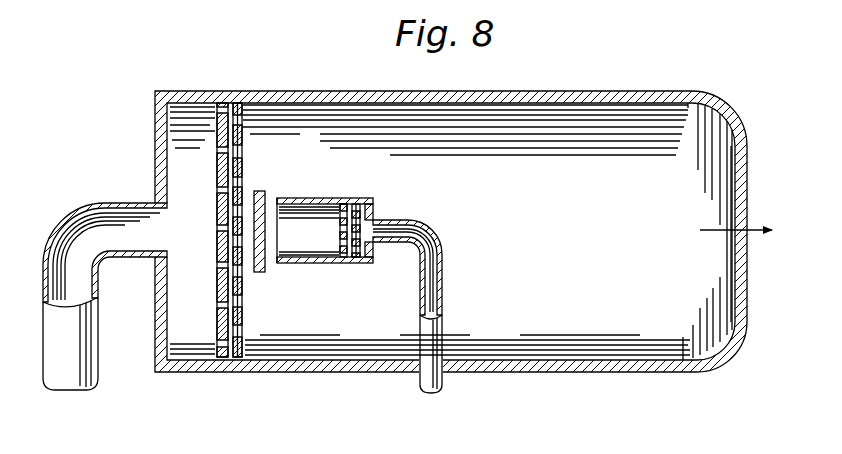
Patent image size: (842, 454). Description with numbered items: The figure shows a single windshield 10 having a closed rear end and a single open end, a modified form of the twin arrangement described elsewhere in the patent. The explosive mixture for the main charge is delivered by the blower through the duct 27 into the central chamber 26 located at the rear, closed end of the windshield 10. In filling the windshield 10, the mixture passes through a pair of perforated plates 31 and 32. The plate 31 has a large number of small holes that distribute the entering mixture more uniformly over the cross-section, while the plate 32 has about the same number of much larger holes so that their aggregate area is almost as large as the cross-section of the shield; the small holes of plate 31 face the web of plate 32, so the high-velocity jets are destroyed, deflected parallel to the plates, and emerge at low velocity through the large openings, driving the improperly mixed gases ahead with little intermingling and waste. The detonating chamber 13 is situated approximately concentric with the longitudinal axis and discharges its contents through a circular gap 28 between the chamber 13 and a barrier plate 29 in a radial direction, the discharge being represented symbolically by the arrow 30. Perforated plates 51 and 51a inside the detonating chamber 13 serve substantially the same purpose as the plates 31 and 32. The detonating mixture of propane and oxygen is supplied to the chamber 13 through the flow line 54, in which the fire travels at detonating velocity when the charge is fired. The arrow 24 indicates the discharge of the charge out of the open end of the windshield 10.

The windshield 10 is at (540, 92).
The duct 27 is at (110, 203).
The central chamber 26 is at (192, 230).
The perforated plate 31 is at (217, 313).
The perforated plate 32 is at (242, 290).
The barrier plate 29 is at (268, 200).
The circular gap 28 is at (270, 200).
The discharge arrows 30 is at (280, 262).
The perforated plate 51 is at (357, 205).
The perforated plate 51a is at (343, 238).
The detonating chamber 13 is at (344, 263).
The flow line 54 is at (441, 382).
The discharge arrow 24 is at (700, 226).